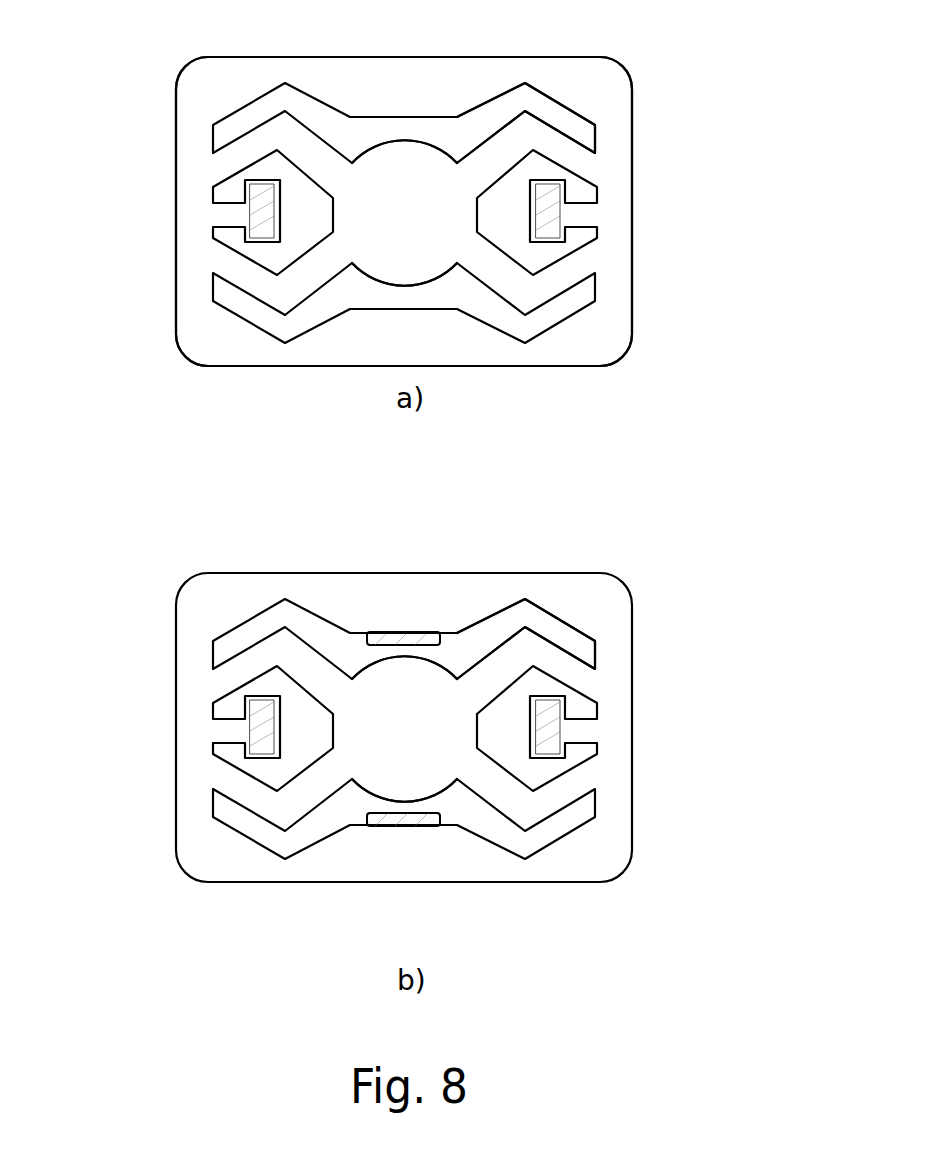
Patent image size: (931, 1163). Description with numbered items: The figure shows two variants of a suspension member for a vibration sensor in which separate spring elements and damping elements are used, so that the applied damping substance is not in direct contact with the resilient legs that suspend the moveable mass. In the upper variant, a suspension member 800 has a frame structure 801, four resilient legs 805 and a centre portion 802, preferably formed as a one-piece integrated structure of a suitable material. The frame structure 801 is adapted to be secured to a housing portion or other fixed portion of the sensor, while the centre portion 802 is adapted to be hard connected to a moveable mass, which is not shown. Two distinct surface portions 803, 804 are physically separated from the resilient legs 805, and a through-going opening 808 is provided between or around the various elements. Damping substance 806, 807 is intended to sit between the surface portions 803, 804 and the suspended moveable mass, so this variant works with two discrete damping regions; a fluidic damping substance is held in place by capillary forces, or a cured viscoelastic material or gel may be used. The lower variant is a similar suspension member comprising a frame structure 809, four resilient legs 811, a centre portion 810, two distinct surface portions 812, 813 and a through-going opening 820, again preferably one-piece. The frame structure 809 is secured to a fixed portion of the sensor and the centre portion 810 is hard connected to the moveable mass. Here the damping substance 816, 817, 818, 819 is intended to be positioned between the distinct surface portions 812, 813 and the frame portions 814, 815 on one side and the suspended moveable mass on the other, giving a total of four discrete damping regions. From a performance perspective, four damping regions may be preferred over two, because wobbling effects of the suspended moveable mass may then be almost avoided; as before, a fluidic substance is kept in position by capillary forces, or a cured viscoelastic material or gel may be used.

The suspension member 800 is at (677, 87).
The frame structure 801 is at (605, 345).
The centre portion 802 is at (390, 177).
The distinct surface portion 803 is at (557, 218).
The distinct surface portion 804 is at (253, 218).
The resilient legs 805 is at (523, 133).
The damping substance 806 is at (530, 229).
The damping substance 807 is at (306, 214).
The through-going opening 808 is at (349, 140).
The frame structure 809 is at (605, 860).
The centre portion 810 is at (402, 697).
The resilient legs 811 is at (527, 647).
The distinct surface portion 812 is at (557, 733).
The distinct surface portion 813 is at (253, 733).
The frame portion 814 is at (424, 632).
The frame portion 815 is at (407, 827).
The damping substance 816 is at (530, 745).
The damping substance 817 is at (306, 730).
The damping substance 818 is at (438, 647).
The damping substance 819 is at (430, 814).
The through-going opening 820 is at (320, 633).